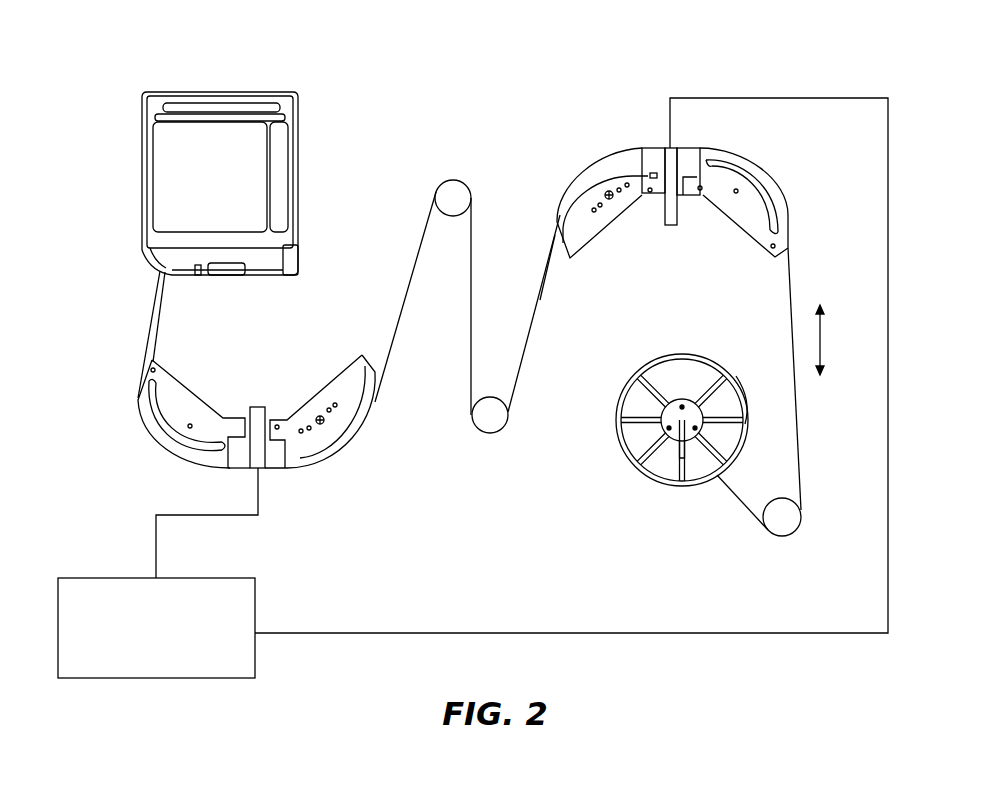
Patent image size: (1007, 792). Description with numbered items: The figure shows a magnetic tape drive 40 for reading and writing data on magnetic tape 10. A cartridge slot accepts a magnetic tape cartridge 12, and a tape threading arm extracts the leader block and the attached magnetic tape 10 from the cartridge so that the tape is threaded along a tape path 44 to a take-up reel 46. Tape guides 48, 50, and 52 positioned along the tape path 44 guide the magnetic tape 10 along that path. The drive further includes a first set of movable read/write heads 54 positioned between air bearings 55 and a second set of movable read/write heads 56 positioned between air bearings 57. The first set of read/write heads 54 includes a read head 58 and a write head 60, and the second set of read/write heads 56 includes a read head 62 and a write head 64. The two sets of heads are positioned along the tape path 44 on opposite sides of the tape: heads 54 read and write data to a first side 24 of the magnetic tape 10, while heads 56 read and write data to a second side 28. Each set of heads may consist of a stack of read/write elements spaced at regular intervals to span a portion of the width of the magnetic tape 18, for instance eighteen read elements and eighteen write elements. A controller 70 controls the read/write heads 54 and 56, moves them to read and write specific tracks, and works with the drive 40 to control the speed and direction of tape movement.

The magnetic tape 10 is at (147, 310).
The magnetic tape cartridge 12 is at (300, 152).
The magnetic tape 18 is at (162, 280).
The first side 24 is at (538, 295).
The second side 28 is at (533, 333).
The magnetic tape drive 40 is at (239, 165).
The tape path 44 is at (792, 278).
The take-up reel 46 is at (710, 360).
The tape guide 48 is at (447, 190).
The tape guide 50 is at (490, 423).
The tape guide 52 is at (785, 523).
The first set of movable read/write heads 54 is at (256, 414).
The air bearings 55 is at (181, 376).
The second set of movable read/write heads 56 is at (672, 217).
The air bearings 57 is at (605, 237).
The read head 58 is at (270, 416).
The write head 60 is at (250, 412).
The read head 62 is at (681, 213).
The write head 64 is at (660, 212).
The controller 70 is at (250, 577).